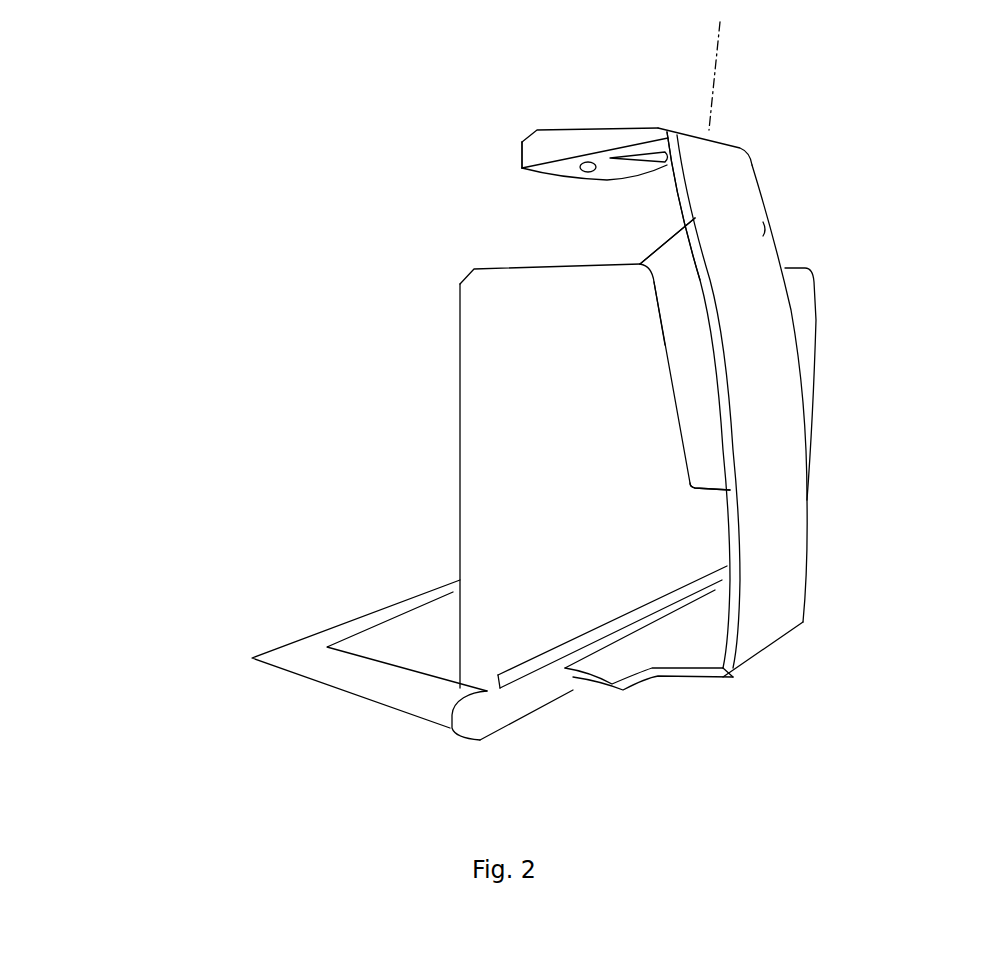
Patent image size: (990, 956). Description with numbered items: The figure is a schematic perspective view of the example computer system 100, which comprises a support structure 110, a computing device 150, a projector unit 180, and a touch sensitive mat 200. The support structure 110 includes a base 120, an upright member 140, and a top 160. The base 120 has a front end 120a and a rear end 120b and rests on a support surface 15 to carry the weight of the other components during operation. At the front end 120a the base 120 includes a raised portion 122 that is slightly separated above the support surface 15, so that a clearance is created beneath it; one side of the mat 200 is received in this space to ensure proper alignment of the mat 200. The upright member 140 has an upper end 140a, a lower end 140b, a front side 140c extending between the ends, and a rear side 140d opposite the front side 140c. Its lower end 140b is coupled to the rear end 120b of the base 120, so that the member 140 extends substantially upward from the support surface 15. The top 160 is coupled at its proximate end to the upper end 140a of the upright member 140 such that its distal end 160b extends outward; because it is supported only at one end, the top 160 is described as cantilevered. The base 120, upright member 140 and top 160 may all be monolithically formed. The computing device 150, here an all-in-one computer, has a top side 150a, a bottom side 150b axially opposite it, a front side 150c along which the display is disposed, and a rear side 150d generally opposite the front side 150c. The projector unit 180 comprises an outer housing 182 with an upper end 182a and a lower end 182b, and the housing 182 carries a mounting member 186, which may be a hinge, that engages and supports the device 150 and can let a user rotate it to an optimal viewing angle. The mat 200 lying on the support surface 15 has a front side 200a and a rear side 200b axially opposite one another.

The support surface 15 is at (228, 733).
The system 100 is at (268, 281).
The support structure 110 is at (883, 264).
The base 120 is at (664, 667).
The front end 120a is at (638, 613).
The rear end 120b is at (731, 686).
The raised portion 122 is at (598, 683).
The upright member 140 is at (748, 394).
The upper end 140a is at (750, 138).
The lower end 140b is at (772, 657).
The front side 140c is at (662, 203).
The rear side 140d is at (765, 229).
The computing device 150 is at (520, 496).
The top side 150a is at (548, 267).
The bottom side 150b is at (458, 712).
The front side 150c is at (452, 438).
The rear side 150d is at (578, 393).
The top 160 is at (634, 105).
The distal end 160b is at (518, 155).
The projector unit 180 is at (724, 394).
The outer housing 182 is at (703, 437).
The upper end 182a is at (696, 216).
The lower end 182b is at (695, 495).
The mounting member 186 is at (645, 303).
The touch sensitive mat 200 is at (411, 684).
The front side 200a is at (353, 621).
The rear side 200b is at (497, 731).